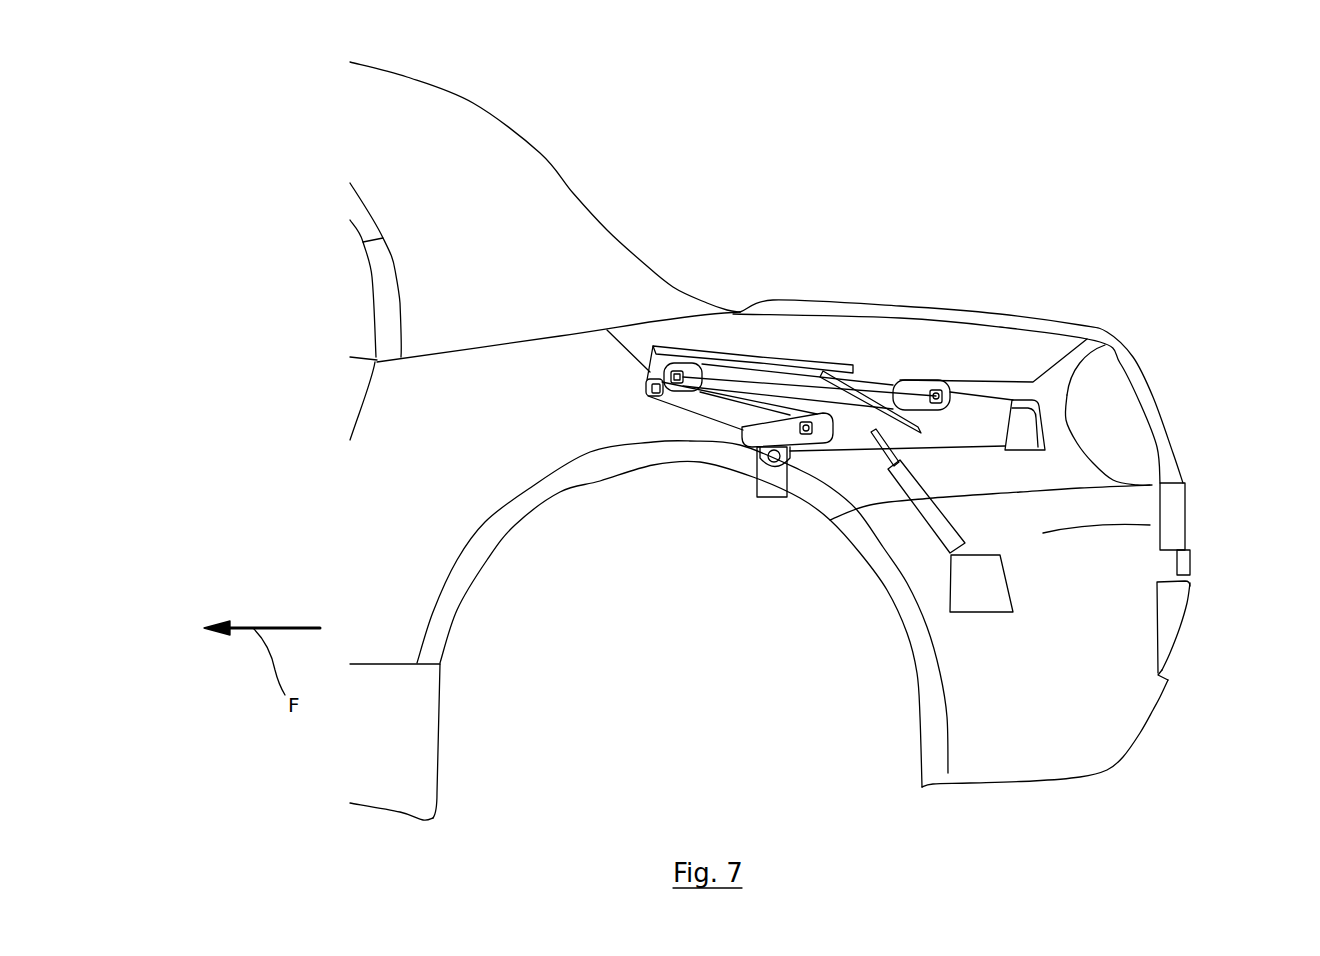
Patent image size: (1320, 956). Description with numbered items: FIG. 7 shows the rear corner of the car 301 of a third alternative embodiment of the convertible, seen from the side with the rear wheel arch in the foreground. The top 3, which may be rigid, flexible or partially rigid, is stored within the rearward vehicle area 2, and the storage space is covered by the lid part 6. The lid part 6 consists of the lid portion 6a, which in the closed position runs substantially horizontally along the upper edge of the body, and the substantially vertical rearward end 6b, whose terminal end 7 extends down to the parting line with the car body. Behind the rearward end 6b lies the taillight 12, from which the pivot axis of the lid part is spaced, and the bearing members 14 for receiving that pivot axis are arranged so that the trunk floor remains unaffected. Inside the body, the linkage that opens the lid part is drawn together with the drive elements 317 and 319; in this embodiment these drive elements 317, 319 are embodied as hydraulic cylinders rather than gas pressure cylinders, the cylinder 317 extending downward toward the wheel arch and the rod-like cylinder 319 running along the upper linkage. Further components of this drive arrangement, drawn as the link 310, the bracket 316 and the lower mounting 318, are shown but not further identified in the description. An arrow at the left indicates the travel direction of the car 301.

The rearward vehicle area 2 is at (1146, 172).
The top 3 is at (535, 190).
The lid part 6 is at (1067, 326).
The lid portion 6a is at (833, 282).
The rearward end 6b is at (1150, 360).
The terminal end 7 is at (1175, 515).
The taillights 12 is at (1107, 423).
The bearing members 14 is at (1032, 445).
The car 301 is at (745, 195).
The pivot link 310 is at (976, 392).
The mounting bracket 316 is at (772, 503).
The drive element 317 is at (932, 513).
The mounting block 318 is at (982, 605).
The drive element 319 is at (894, 408).